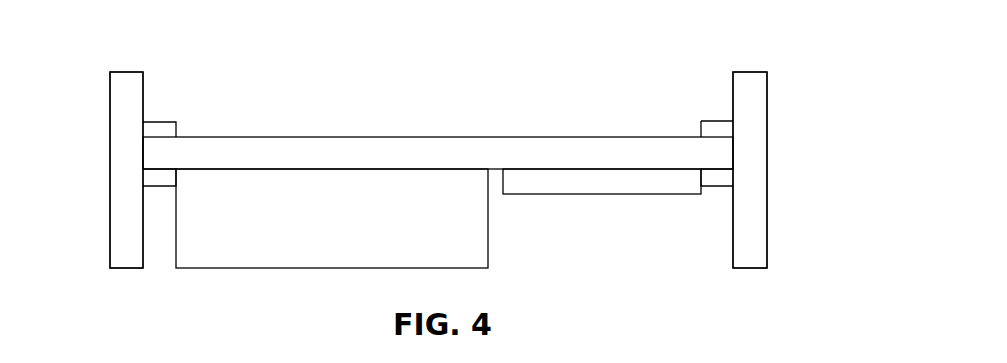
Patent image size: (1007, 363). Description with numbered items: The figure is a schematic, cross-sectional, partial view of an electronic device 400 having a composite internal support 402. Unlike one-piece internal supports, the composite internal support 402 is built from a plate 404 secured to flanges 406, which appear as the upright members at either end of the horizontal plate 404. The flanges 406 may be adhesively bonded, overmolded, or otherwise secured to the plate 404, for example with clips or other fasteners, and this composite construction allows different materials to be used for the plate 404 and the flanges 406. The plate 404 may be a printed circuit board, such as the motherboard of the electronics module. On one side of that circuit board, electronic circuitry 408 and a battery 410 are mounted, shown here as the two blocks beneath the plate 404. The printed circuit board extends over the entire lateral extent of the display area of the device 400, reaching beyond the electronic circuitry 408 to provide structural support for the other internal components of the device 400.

The electronic device 400 is at (756, 31).
The composite internal support 402 is at (762, 140).
The plate 404 is at (496, 139).
The flanges 406 is at (757, 224).
The electronic circuitry 408 is at (627, 190).
The battery 410 is at (332, 218).